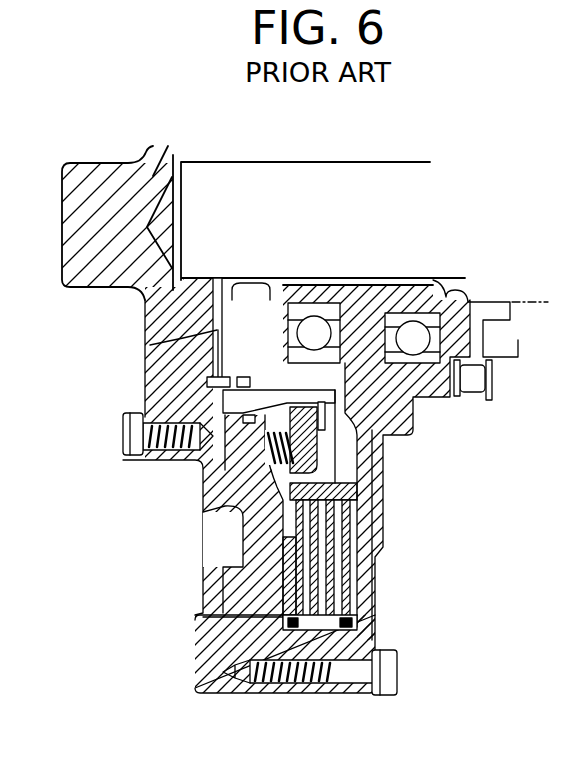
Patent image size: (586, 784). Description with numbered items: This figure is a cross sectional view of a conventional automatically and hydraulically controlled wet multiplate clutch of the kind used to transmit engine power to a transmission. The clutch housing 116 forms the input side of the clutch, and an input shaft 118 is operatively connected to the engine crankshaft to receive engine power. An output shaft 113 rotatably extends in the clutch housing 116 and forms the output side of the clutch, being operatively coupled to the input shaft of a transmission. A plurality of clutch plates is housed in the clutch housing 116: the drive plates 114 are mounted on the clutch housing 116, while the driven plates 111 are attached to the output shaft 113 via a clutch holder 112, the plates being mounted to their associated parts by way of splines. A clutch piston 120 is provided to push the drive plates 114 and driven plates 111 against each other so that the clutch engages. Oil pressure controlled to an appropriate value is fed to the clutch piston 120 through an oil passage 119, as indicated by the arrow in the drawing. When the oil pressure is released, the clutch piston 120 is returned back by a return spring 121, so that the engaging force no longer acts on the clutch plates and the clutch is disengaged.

The driven plates 111 is at (353, 518).
The clutch holder 112 is at (350, 463).
The output shaft 113 is at (356, 196).
The drive plates 114 is at (350, 590).
The clutch housing 116 is at (273, 693).
The input shaft 118 is at (84, 286).
The oil passage 119 is at (143, 372).
The clutch piston 120 is at (223, 473).
The return spring 121 is at (228, 505).